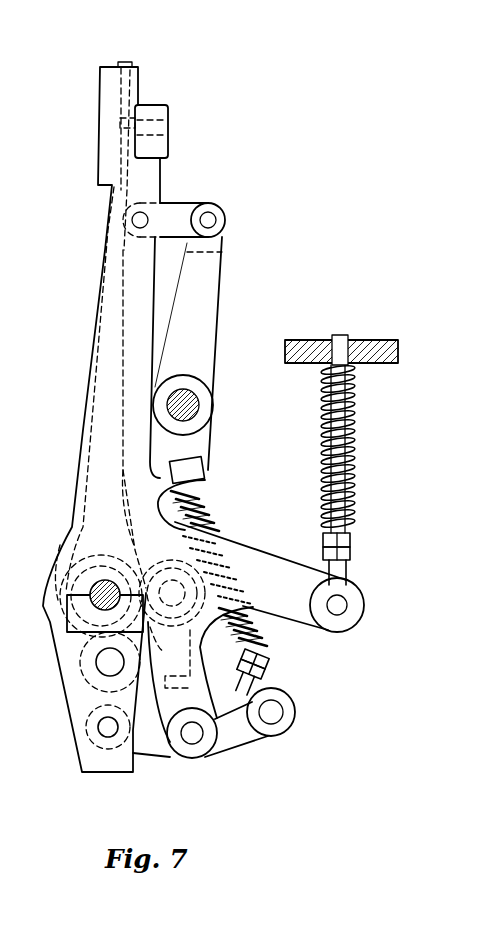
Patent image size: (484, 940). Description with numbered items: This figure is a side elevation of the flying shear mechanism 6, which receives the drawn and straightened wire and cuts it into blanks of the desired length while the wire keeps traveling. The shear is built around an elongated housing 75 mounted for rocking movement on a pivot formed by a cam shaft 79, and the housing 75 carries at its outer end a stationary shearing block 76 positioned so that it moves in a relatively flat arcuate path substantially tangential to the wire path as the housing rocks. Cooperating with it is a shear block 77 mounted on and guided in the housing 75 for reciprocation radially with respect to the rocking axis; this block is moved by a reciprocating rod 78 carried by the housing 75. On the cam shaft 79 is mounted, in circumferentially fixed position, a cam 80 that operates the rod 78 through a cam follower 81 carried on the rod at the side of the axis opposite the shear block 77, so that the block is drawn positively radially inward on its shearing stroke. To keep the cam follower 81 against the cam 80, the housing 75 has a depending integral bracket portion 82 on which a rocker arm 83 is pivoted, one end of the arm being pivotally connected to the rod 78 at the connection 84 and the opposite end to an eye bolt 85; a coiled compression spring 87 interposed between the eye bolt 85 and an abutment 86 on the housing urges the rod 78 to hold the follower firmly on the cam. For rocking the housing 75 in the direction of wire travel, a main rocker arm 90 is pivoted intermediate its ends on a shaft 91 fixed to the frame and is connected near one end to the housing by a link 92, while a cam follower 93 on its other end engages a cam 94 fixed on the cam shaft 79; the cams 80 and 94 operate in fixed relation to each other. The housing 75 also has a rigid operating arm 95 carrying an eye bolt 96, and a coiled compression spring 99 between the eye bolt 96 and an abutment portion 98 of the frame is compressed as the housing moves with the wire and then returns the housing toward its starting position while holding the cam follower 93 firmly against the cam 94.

The flying shear mechanism 6 is at (168, 178).
The housing 75 is at (84, 441).
The stationary shearing block 76 is at (150, 104).
The shear block 77 is at (126, 61).
The reciprocating rod 78 is at (104, 325).
The cam shaft 79 is at (95, 590).
The cam 80 is at (101, 582).
The cam follower 81 is at (75, 648).
The bracket portion 82 is at (193, 694).
The rocker arm 83 is at (235, 746).
The pivotal connection 84 is at (100, 727).
The eye bolt 85 is at (272, 688).
The abutment 86 is at (205, 470).
The coiled compression spring 87 is at (218, 513).
The main rocker arm 90 is at (214, 318).
The shaft 91 is at (200, 404).
The link 92 is at (182, 205).
The cam follower 93 is at (172, 576).
The cam 94 is at (140, 548).
The operating arm 95 is at (300, 557).
The eye bolt 96 is at (348, 571).
The abutment portion 98 is at (373, 360).
The coiled compression spring 99 is at (357, 437).